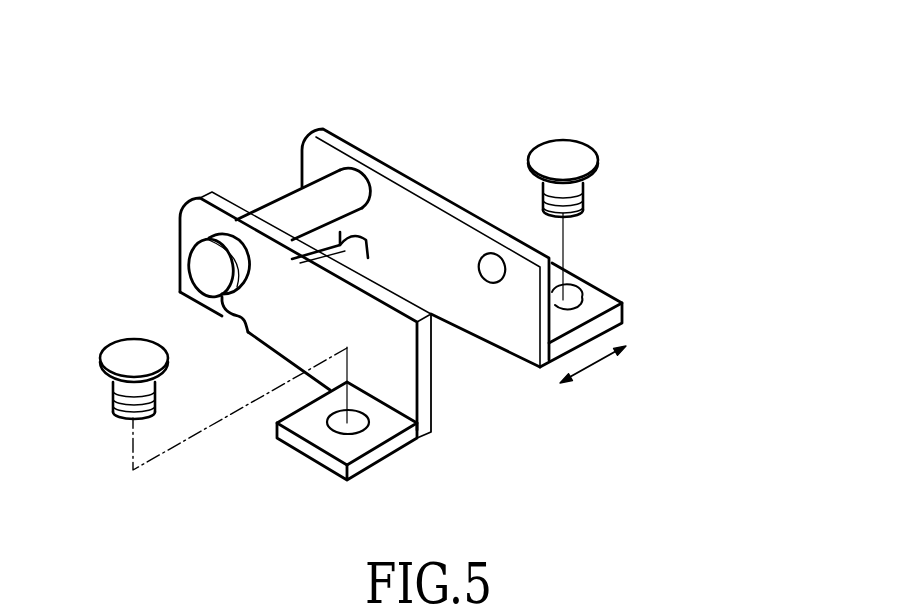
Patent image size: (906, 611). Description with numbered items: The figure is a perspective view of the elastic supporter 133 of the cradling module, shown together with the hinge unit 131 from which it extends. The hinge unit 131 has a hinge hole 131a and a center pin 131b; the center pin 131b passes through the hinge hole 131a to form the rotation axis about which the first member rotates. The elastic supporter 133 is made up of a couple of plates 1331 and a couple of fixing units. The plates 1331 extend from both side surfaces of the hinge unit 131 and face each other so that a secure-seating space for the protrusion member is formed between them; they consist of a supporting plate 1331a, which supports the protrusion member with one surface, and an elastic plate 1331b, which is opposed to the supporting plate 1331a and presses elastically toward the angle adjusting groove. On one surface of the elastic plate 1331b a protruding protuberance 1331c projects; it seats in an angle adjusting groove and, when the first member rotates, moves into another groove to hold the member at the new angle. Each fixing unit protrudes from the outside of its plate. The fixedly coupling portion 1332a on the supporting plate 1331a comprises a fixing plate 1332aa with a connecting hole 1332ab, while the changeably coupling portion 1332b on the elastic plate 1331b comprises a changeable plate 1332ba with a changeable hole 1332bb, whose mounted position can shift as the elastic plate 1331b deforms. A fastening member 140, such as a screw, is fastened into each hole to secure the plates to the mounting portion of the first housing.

The elastic supporter 133 is at (826, 12).
The plates 1331 is at (525, 58).
The supporting plate 1331a is at (382, 297).
The elastic plate 1331b is at (428, 200).
The protruding protuberance 1331c is at (488, 268).
The fixedly coupling portion 1332a is at (735, 390).
The fixing plate 1332aa is at (393, 442).
The connecting hole 1332ab is at (355, 421).
The changeably coupling portion 1332b is at (735, 237).
The changeable plate 1332ba is at (603, 300).
The changeable hole 1332bb is at (570, 298).
The hinge unit 131 is at (88, 129).
The hinge hole 131a is at (210, 240).
The center pin 131b is at (290, 212).
The fastening member 140 is at (583, 191).